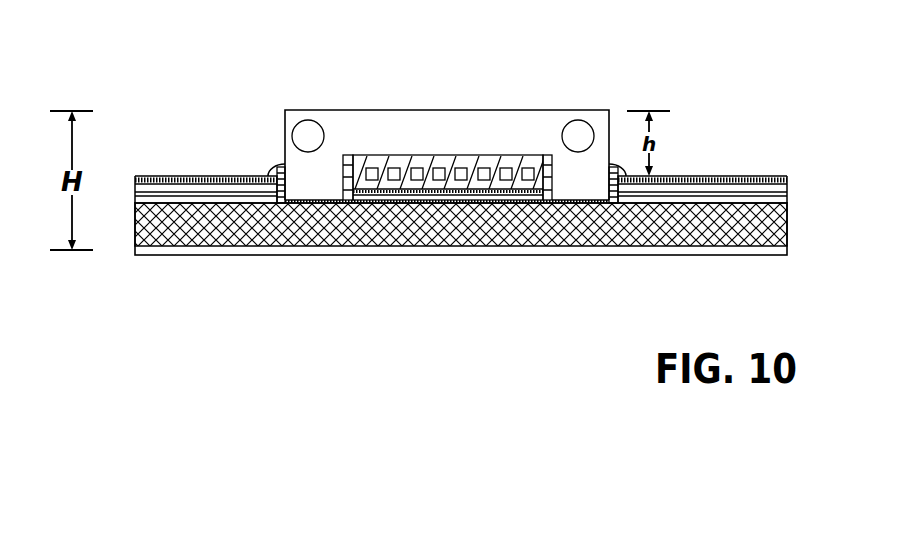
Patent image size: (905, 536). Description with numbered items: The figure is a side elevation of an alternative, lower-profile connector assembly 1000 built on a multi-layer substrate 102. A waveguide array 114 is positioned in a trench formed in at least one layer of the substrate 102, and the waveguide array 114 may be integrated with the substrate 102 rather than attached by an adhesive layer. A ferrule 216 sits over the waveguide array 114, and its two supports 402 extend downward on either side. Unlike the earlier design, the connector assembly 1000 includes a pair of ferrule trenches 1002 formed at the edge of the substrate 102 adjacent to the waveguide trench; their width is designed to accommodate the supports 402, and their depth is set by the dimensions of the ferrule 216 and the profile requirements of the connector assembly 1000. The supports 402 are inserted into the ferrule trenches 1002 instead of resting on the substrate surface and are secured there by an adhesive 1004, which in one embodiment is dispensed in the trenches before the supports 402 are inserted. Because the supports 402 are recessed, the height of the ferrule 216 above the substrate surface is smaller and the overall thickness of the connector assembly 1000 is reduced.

The connector assembly 1000 is at (521, 53).
The multi-layer substrate 102 is at (797, 176).
The waveguide array 114 is at (522, 193).
The ferrule 216 is at (405, 118).
The supports 402 is at (307, 187).
The ferrule trenches 1002 is at (350, 208).
The adhesive 1004 is at (281, 165).